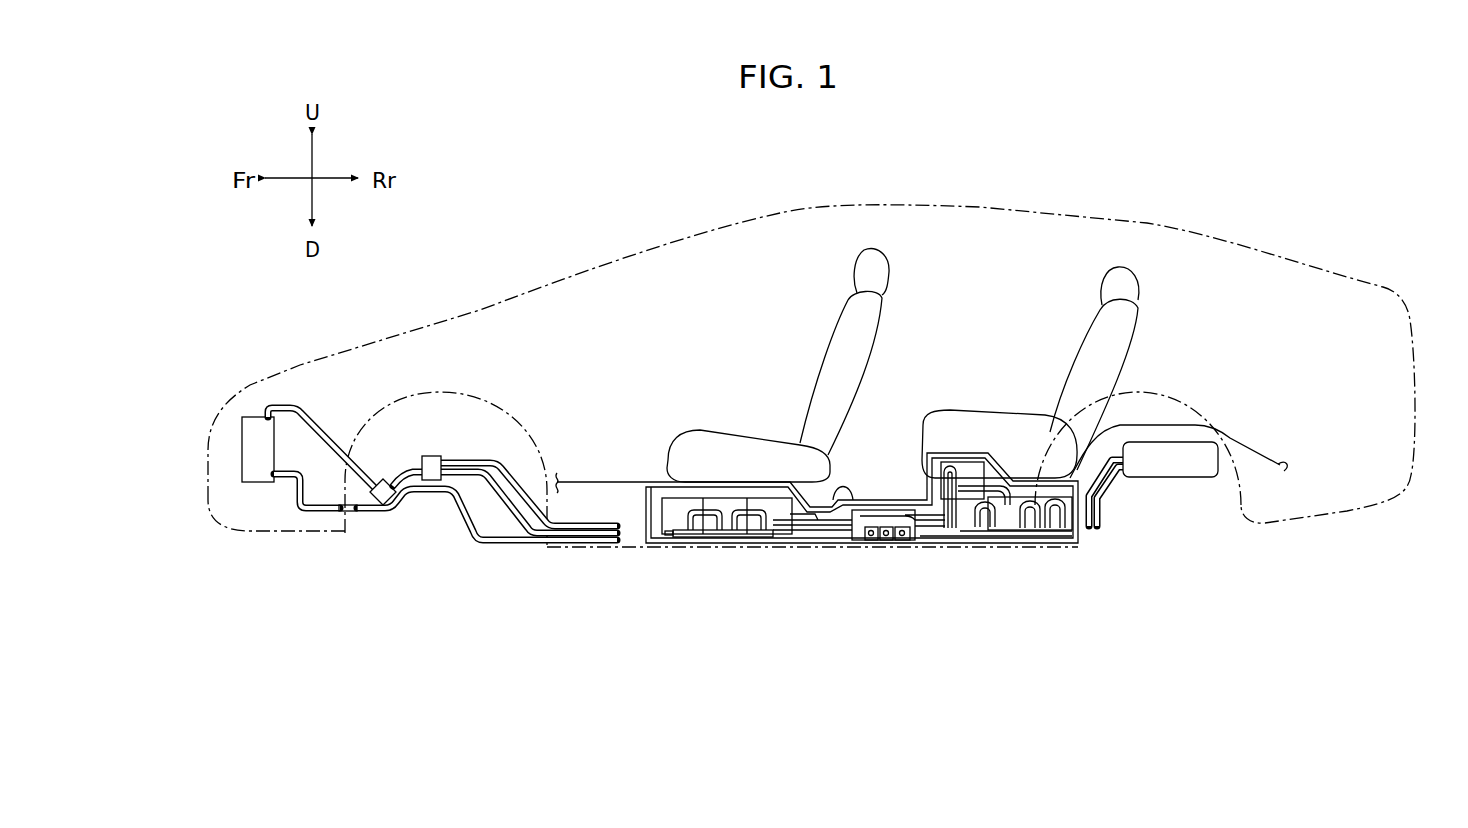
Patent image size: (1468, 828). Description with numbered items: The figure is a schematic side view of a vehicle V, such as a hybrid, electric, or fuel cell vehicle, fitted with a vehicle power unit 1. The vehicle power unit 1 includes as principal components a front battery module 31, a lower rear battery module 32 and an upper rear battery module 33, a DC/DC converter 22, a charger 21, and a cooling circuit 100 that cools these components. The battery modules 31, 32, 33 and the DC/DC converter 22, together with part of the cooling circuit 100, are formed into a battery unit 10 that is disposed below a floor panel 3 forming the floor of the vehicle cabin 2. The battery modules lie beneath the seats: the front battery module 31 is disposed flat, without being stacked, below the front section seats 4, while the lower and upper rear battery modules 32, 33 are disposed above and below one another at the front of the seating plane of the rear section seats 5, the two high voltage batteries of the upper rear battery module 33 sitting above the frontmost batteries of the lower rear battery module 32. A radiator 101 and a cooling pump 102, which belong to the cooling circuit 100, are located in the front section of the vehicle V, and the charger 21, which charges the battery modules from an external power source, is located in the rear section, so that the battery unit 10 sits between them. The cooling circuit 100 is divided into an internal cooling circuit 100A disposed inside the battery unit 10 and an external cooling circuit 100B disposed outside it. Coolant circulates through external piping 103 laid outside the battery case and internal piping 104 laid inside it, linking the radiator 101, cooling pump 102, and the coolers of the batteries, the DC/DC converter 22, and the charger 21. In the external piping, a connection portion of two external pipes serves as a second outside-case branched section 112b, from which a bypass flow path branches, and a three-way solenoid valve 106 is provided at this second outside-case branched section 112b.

The vehicle V is at (1165, 184).
The vehicle power unit 1 is at (1073, 570).
The vehicle cabin 2 is at (982, 348).
The floor panel 3 is at (838, 505).
The front section seats 4 is at (738, 428).
The rear section seats 5 is at (1013, 412).
The battery unit 10 is at (868, 545).
The charger 21 is at (1172, 442).
The DC/DC converter 22 is at (893, 510).
The front battery module 31 is at (729, 542).
The lower rear battery module 32 is at (1015, 545).
The upper rear battery module 33 is at (965, 462).
The cooling circuit 100 is at (702, 638).
The internal cooling circuit 100A is at (682, 547).
The external cooling circuit 100B is at (592, 552).
The radiator 101 is at (262, 455).
The cooling pump 102 is at (383, 505).
The external piping 103 is at (483, 548).
The internal piping 104 is at (802, 542).
The three-way solenoid valve 106 is at (432, 456).
The second outside-case branched section 112b is at (505, 436).